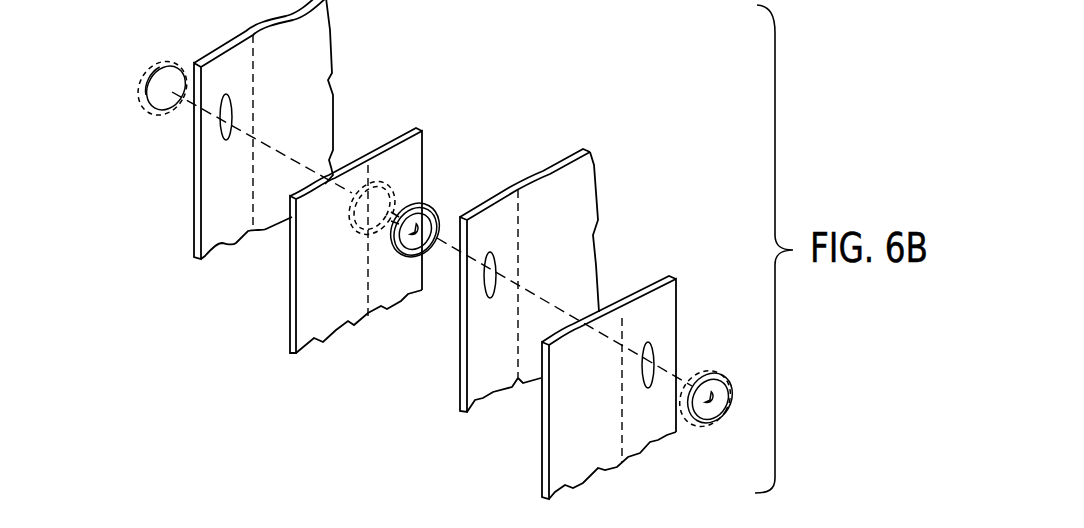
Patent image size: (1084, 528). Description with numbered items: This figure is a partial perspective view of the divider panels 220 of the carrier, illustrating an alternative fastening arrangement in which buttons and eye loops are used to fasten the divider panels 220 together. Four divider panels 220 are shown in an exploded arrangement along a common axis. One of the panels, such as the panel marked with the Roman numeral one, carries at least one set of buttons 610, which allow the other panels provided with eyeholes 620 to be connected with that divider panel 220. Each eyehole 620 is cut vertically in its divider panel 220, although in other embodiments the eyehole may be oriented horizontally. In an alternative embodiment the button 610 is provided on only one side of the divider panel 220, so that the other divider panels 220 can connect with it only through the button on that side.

The divider panel 220 is at (297, 74).
The button 610 is at (177, 64).
The eyehole 620 is at (220, 126).